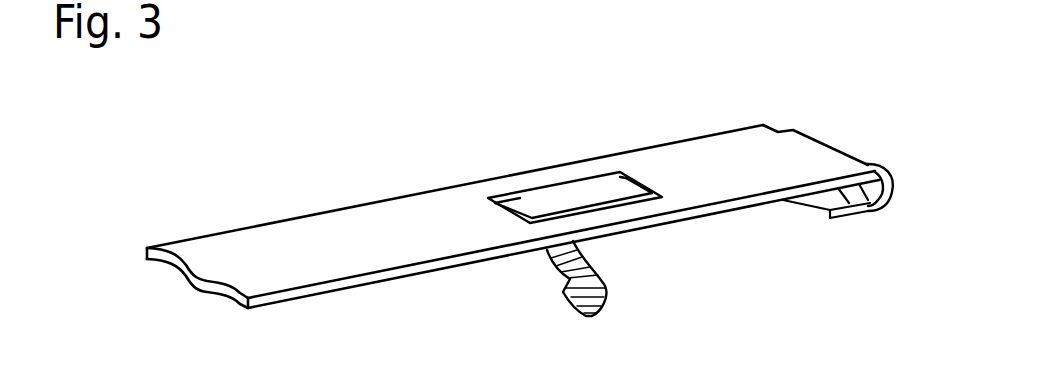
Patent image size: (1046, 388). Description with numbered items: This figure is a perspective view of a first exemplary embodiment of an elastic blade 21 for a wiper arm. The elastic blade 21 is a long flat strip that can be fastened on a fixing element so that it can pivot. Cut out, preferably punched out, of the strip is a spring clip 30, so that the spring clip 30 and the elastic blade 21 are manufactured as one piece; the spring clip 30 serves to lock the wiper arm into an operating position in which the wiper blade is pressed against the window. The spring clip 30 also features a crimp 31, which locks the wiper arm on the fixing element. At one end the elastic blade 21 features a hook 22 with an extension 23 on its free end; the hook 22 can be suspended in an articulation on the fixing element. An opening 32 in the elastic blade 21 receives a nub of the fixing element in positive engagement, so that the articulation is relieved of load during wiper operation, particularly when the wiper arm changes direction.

The elastic blade 21 is at (367, 222).
The hook 22 is at (883, 205).
The extension 23 is at (838, 217).
The spring clip 30 is at (603, 300).
The crimp 31 is at (597, 263).
The opening 32 is at (583, 185).